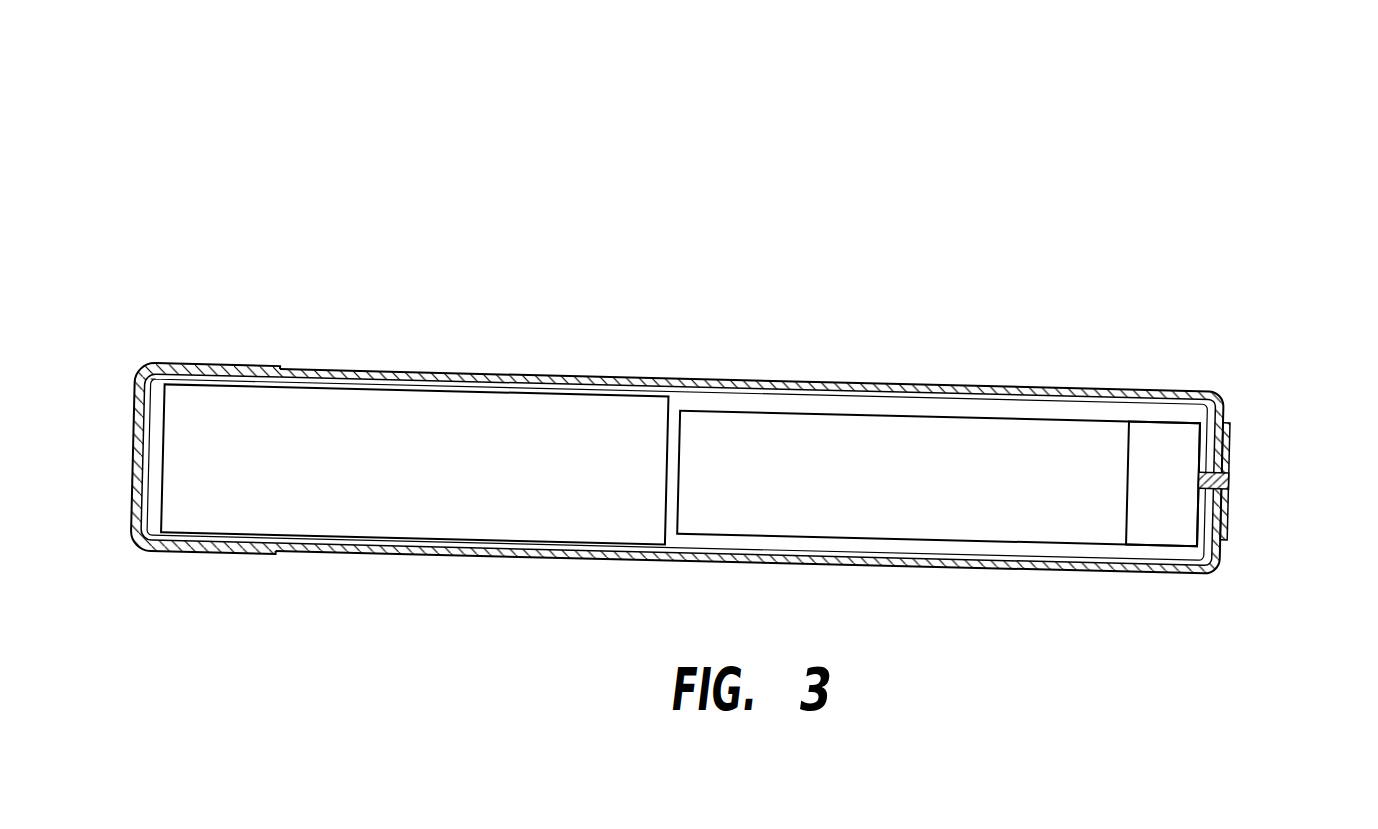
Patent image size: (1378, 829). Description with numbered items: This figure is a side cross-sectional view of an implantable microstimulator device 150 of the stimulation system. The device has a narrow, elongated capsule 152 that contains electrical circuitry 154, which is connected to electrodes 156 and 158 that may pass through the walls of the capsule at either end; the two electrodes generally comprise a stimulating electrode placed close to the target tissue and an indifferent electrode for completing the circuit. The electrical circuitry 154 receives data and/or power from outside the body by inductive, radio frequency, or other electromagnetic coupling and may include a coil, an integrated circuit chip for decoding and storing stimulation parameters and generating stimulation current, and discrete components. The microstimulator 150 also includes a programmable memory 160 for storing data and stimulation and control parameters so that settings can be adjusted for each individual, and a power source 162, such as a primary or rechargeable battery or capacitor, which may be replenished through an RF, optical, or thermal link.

The microstimulator device 150 is at (327, 195).
The capsule 152 is at (1010, 388).
The electrical circuitry 154 is at (918, 521).
The electrode 156 is at (216, 366).
The electrode 158 is at (1229, 461).
The programmable memory 160 is at (1158, 420).
The power source 162 is at (448, 505).